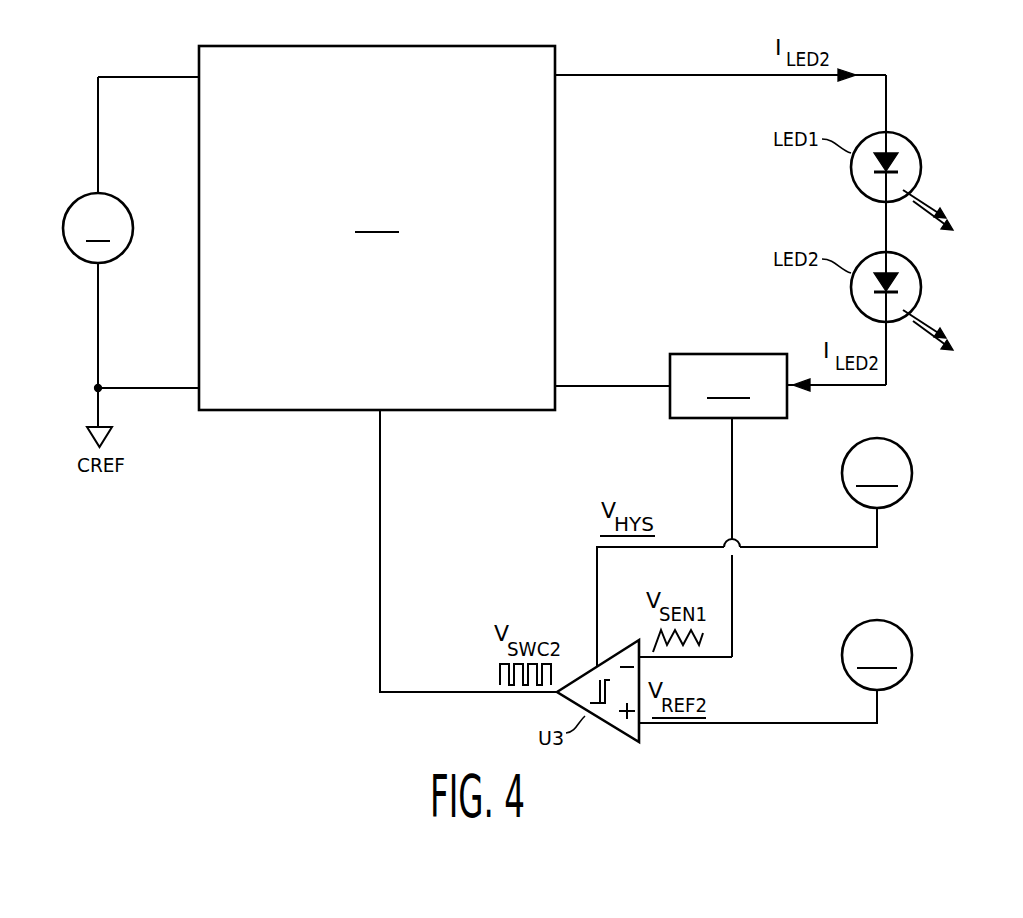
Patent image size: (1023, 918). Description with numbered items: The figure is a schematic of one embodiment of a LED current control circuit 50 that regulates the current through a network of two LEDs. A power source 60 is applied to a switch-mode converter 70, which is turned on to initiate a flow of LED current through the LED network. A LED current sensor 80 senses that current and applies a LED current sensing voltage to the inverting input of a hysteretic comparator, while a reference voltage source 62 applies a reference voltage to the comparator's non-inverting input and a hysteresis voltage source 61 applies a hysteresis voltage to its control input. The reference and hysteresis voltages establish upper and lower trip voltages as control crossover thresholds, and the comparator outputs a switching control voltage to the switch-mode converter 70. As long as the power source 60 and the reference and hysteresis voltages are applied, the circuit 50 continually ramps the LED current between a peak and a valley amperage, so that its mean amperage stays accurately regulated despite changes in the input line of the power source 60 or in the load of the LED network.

The LED current control circuit 50 is at (166, 585).
The power source 60 is at (80, 210).
The hysteresis voltage source 61 is at (911, 482).
The reference voltage source 62 is at (913, 662).
The switch-mode converter 70 is at (555, 208).
The LED current sensor 80 is at (706, 354).